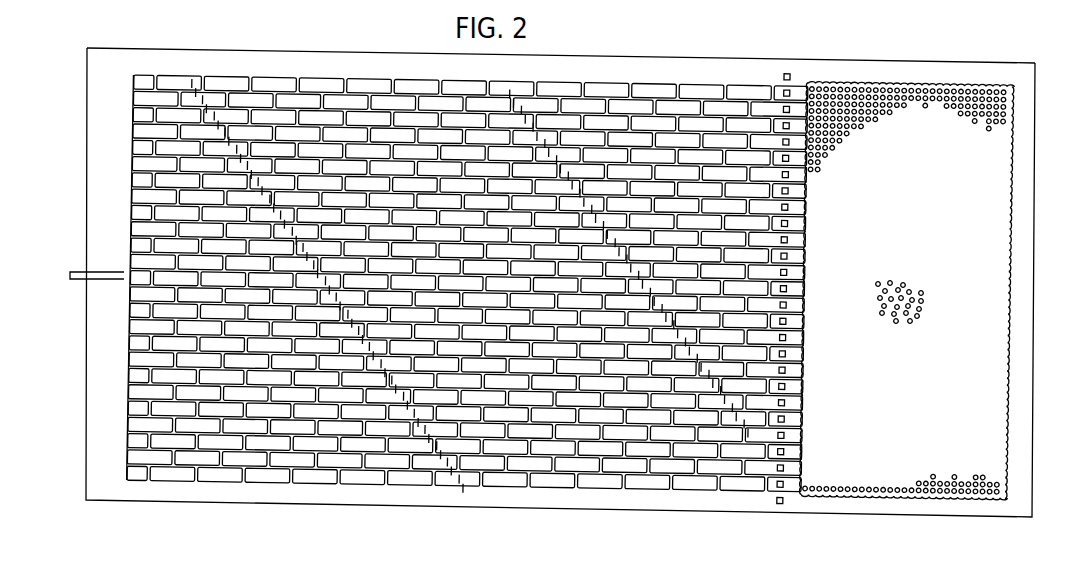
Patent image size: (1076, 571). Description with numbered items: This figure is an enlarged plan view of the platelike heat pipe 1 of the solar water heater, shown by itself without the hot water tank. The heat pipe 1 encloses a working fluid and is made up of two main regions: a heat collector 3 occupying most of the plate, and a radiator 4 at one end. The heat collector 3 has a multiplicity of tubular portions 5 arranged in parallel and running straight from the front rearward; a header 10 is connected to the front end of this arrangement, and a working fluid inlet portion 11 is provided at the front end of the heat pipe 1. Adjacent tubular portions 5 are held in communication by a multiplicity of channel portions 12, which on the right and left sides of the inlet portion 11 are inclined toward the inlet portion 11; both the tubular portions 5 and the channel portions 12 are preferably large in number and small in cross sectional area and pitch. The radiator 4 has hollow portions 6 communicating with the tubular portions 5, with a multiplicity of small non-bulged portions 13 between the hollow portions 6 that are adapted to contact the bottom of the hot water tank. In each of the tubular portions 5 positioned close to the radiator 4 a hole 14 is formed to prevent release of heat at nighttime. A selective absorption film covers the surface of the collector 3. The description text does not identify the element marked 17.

The heat pipe 1 is at (636, 503).
The heat collector 3 is at (311, 455).
The radiator 4 is at (925, 456).
The tubular portions 5 is at (329, 83).
The hollow portions 6 is at (949, 80).
The header 10 is at (125, 390).
The working fluid inlet portion 11 is at (106, 271).
The channel portions 12 is at (656, 98).
The non-bulged portions 13 is at (893, 86).
The hole 14 is at (790, 73).
The frame 17 is at (750, 0).